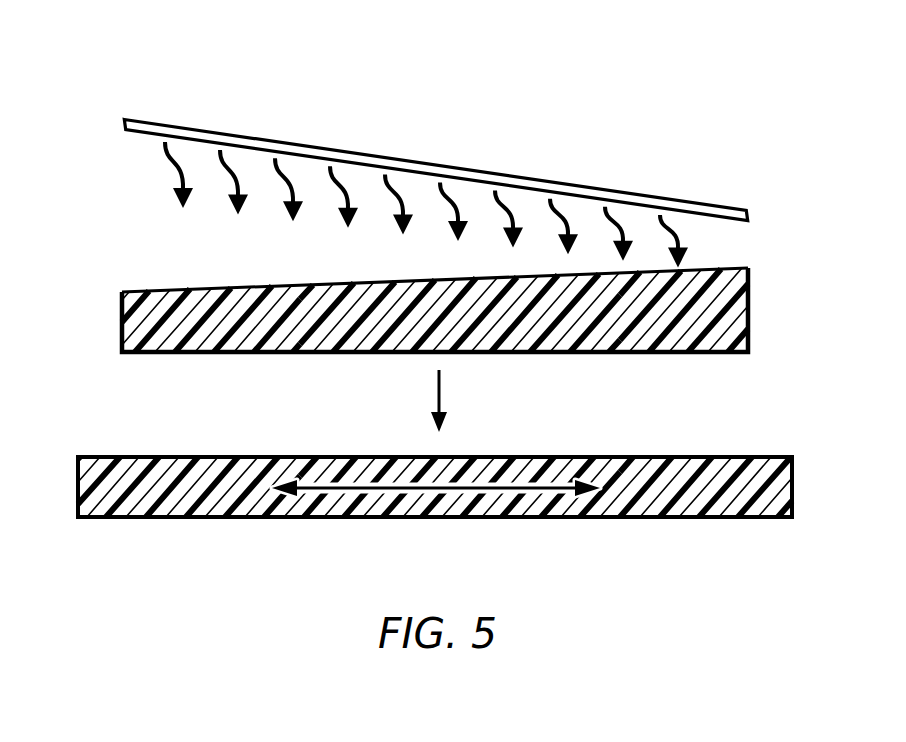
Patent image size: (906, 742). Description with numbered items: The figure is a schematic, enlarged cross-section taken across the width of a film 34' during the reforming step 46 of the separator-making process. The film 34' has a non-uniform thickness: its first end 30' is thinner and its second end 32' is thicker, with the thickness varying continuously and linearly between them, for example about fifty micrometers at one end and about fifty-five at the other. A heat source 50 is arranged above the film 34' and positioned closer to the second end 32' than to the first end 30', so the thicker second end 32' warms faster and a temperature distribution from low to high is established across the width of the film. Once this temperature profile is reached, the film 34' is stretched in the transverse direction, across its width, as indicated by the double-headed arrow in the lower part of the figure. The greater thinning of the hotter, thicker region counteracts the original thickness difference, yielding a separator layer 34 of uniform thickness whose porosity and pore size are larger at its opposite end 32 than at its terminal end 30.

The reforming step 46 is at (166, 80).
The heat source 50 is at (400, 157).
The first end 30' is at (427, 332).
The film 34' is at (478, 340).
The second end 32' is at (457, 338).
The terminal end 30 is at (420, 498).
The separator layer 34 is at (460, 516).
The opposite end 32 is at (448, 516).